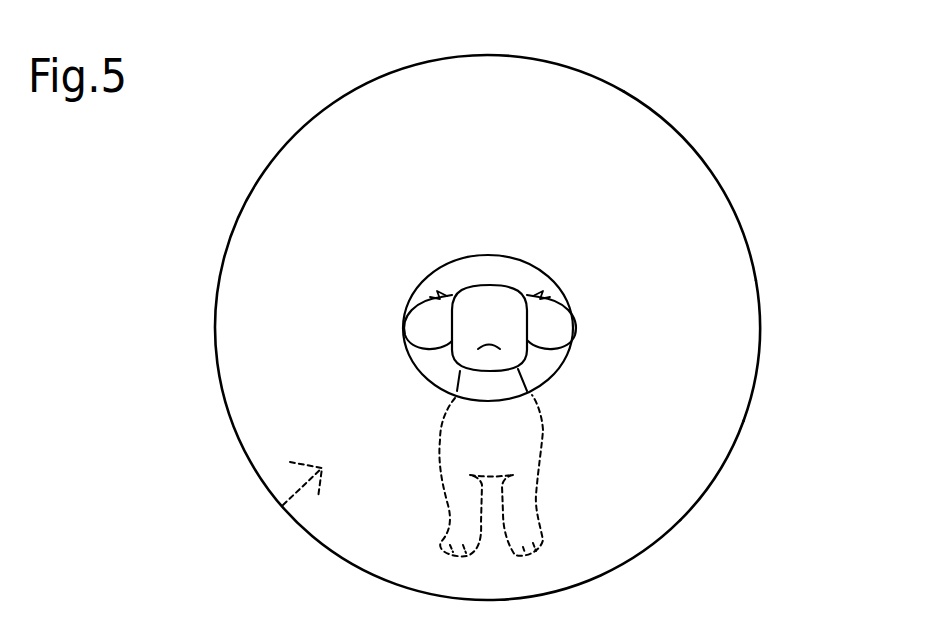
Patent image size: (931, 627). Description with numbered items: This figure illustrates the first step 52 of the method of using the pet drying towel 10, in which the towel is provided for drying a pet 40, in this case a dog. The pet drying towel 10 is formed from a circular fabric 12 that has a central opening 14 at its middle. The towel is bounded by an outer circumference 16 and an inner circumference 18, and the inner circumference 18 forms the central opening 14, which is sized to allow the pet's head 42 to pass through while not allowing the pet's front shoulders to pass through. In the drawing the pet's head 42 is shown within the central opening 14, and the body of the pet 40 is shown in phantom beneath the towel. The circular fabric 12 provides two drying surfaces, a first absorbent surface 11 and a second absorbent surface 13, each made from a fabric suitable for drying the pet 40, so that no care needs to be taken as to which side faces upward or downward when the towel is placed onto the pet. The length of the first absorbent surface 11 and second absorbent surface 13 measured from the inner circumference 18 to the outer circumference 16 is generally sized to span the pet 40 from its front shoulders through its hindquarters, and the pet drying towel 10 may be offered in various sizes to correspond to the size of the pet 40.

The pet drying towel 10 is at (198, 257).
The first absorbent surface 11 is at (283, 505).
The circular fabric 12 is at (740, 367).
The second absorbent surface 13 is at (733, 236).
The central opening 14 is at (452, 280).
The outer circumference 16 is at (710, 487).
The inner circumference 18 is at (555, 348).
The pet 40 is at (533, 442).
The pet's head 42 is at (497, 292).
The first step 52 is at (813, 139).